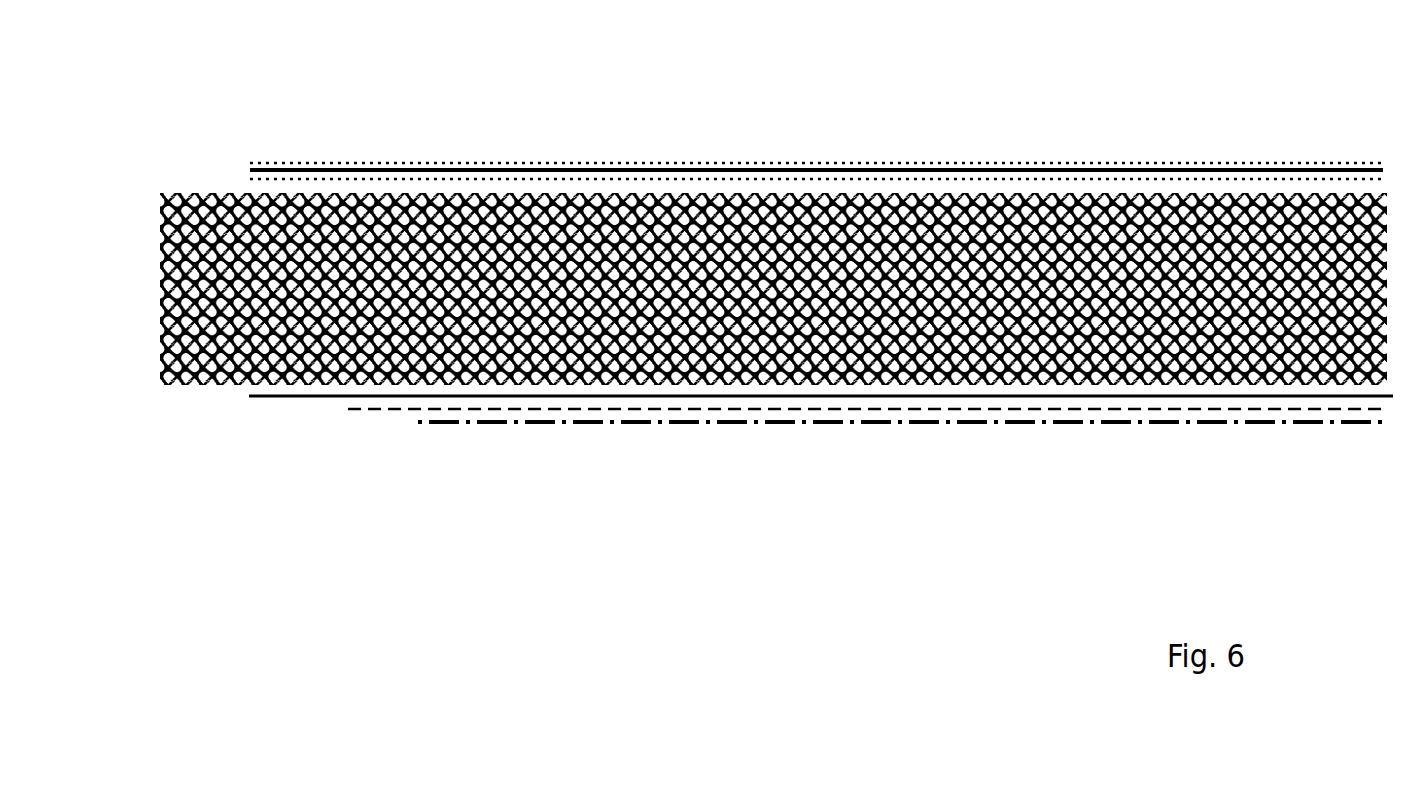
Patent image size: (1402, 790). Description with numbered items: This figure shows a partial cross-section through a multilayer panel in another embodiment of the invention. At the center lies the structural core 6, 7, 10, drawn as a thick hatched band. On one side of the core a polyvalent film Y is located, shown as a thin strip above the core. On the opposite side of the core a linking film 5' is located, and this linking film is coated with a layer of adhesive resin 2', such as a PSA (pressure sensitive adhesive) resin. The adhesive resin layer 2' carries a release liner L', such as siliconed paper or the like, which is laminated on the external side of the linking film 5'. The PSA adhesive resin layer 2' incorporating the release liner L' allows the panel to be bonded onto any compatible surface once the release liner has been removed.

The structural core 6 is at (161, 289).
The structural core 7 is at (161, 289).
The structural core 10 is at (161, 289).
The polyvalent film Y is at (353, 170).
The linking film 5' is at (821, 451).
The layer of adhesive resin 2' is at (866, 458).
The release liner L' is at (903, 472).